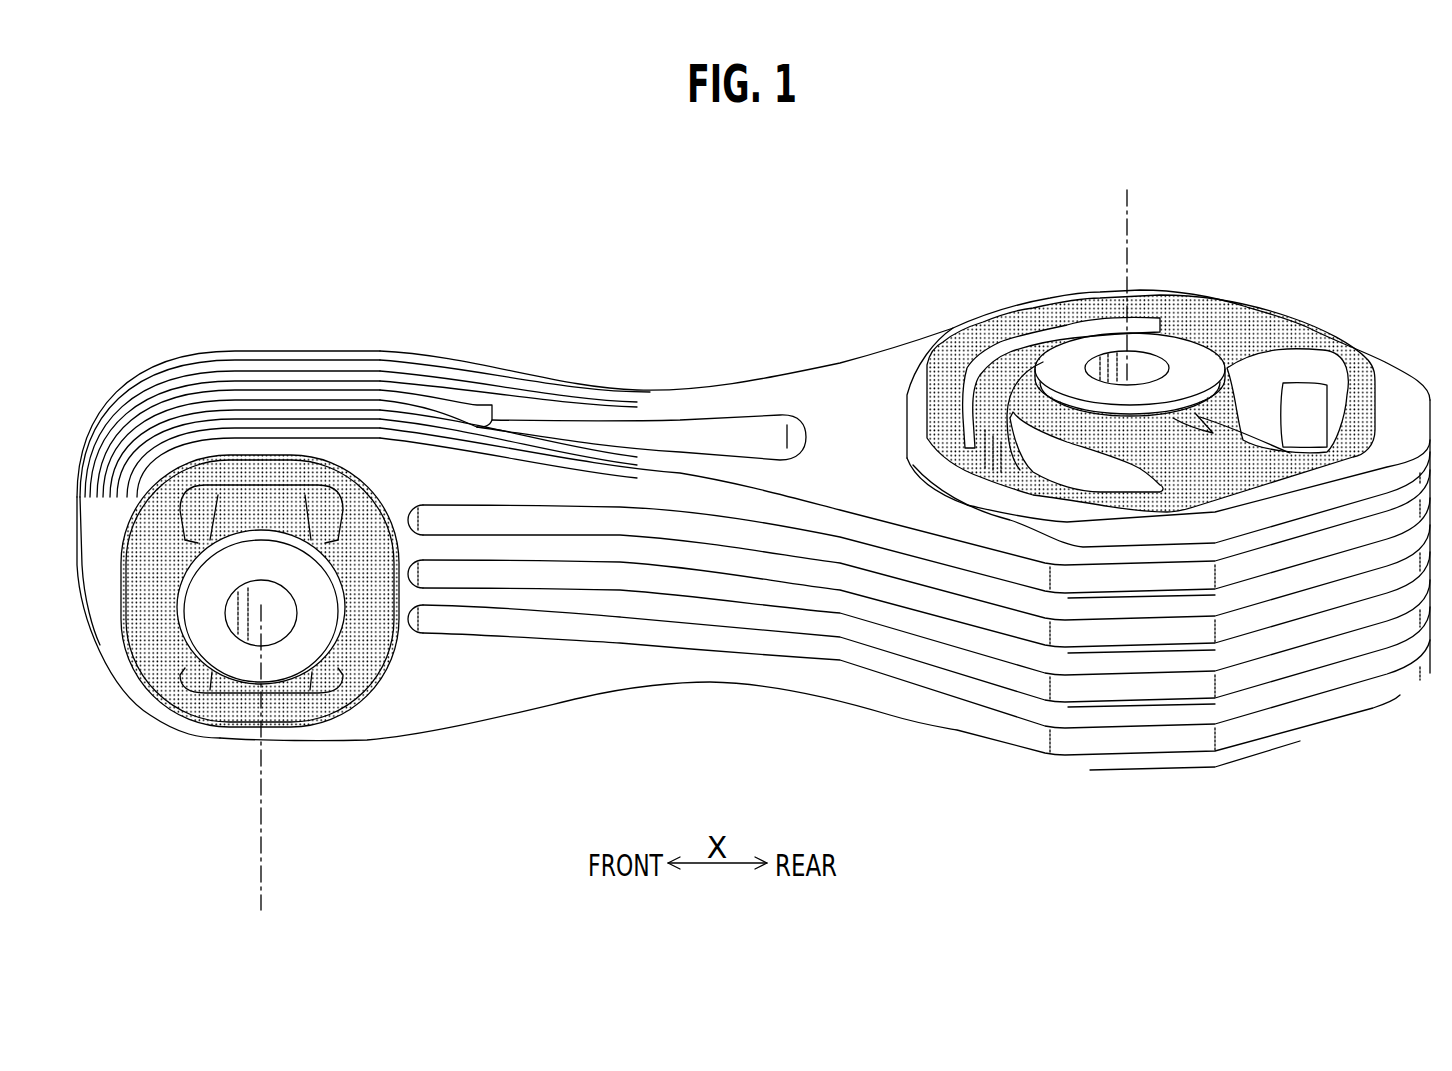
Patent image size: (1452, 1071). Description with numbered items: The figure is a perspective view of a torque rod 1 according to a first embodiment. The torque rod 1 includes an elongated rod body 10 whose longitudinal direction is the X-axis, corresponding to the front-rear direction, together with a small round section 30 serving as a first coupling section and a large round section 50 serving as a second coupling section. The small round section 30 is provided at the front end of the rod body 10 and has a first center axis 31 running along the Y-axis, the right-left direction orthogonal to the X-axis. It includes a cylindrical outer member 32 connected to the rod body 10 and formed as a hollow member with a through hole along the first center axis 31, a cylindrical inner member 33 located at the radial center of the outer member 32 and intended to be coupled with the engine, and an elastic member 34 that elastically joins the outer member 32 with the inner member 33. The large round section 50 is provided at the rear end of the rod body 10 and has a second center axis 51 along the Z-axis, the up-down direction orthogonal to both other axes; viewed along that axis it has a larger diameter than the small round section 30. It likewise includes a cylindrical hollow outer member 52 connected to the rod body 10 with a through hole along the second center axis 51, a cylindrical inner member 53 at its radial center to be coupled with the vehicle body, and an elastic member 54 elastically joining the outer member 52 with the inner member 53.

The torque rod 1 is at (240, 207).
The rod body 10 is at (757, 380).
The small round section 30 is at (73, 810).
The first center axis 31 is at (261, 819).
The outer member 32 is at (107, 620).
The inner member 33 is at (207, 640).
The elastic member 34 is at (153, 643).
The large round section 50 is at (1390, 292).
The second center axis 51 is at (1127, 240).
The outer member 52 is at (1403, 380).
The inner member 53 is at (1187, 360).
The elastic member 54 is at (1270, 337).